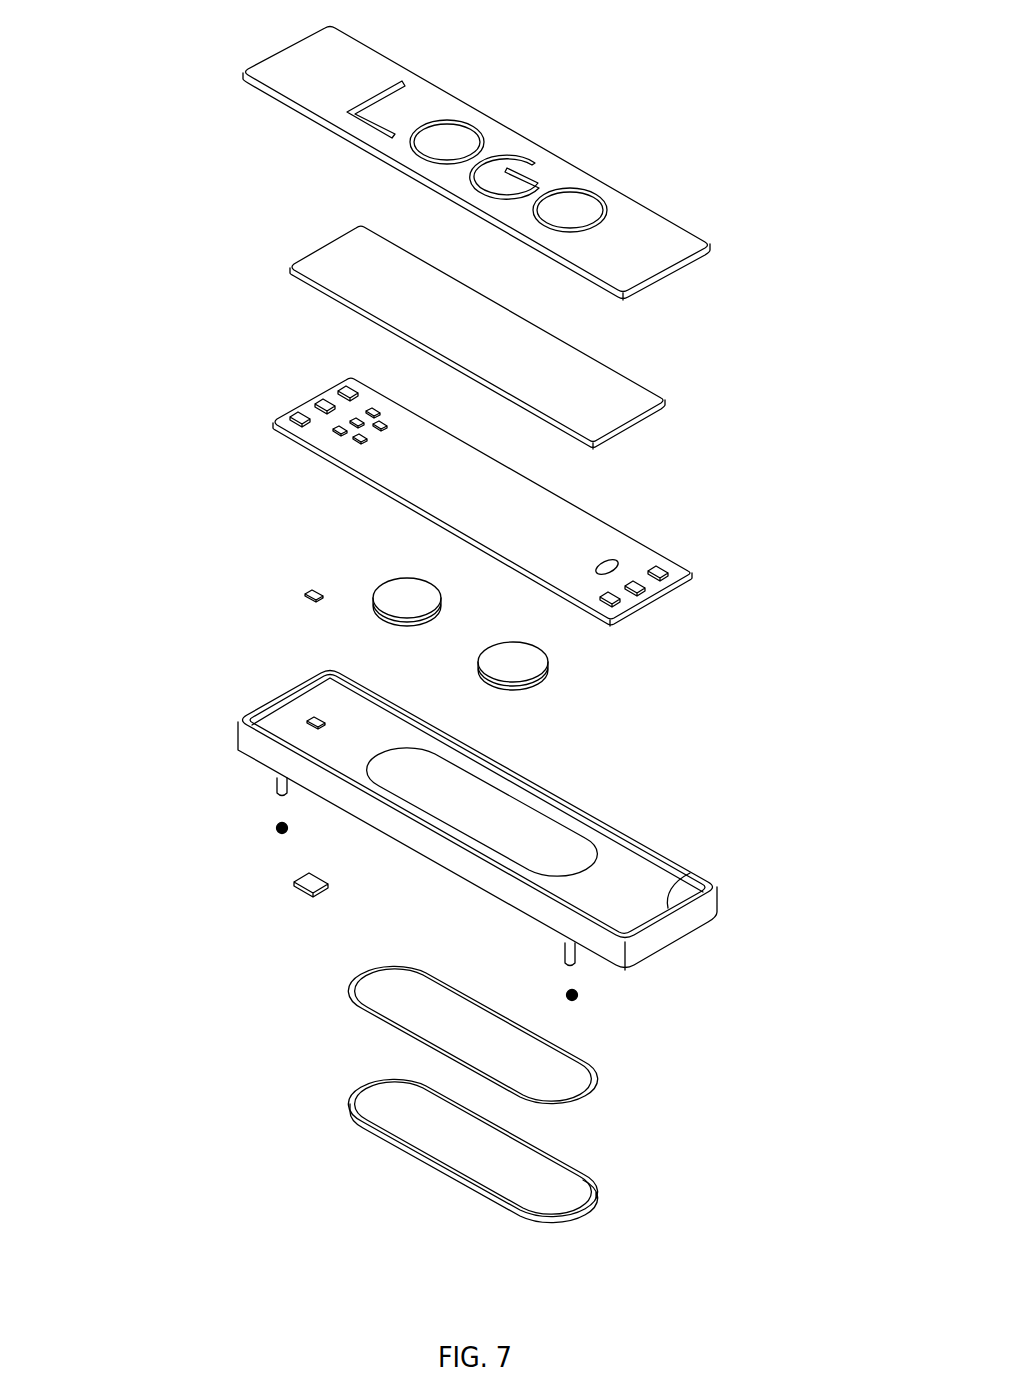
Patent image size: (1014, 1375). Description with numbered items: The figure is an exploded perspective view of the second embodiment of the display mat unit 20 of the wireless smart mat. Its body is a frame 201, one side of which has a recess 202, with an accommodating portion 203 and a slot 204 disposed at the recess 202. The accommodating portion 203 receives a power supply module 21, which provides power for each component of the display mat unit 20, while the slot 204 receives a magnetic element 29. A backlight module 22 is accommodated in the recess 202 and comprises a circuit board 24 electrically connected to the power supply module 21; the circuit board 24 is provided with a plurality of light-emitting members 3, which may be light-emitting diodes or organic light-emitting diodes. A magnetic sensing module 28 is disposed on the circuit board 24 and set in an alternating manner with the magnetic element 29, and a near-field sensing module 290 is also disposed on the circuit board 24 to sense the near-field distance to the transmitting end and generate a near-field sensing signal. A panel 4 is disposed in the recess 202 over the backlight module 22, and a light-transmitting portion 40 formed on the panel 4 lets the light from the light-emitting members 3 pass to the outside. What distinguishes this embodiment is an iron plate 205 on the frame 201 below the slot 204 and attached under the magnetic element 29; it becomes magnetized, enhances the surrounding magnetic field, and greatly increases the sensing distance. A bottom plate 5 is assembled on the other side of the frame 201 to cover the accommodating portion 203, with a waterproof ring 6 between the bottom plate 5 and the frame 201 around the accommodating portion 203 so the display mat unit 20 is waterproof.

The display mat unit 20 is at (172, 145).
The light-transmitting portion 40 is at (532, 158).
The panel 4 is at (655, 240).
The backlight module 22 is at (605, 390).
The circuit board 24 is at (590, 540).
The magnetic sensing module 28 is at (335, 432).
The near-field sensing module 290 is at (613, 560).
The light-emitting member 3 is at (652, 583).
The power supply module 21 is at (407, 598).
The magnetic element 29 is at (298, 602).
The frame 201 is at (245, 718).
The slot 204 is at (305, 725).
The accommodating portion 203 is at (517, 813).
The recess 202 is at (690, 873).
The iron plate 205 is at (300, 888).
The waterproof ring 6 is at (363, 975).
The bottom plate 5 is at (367, 1090).